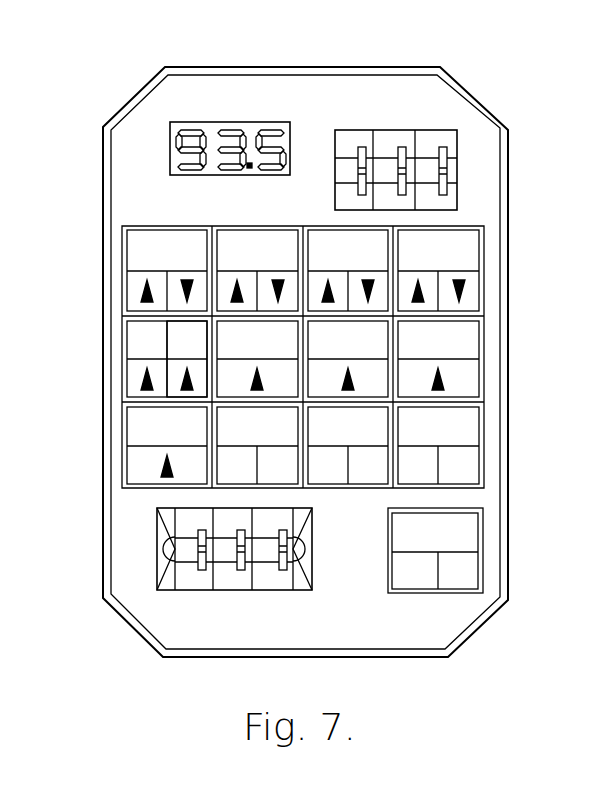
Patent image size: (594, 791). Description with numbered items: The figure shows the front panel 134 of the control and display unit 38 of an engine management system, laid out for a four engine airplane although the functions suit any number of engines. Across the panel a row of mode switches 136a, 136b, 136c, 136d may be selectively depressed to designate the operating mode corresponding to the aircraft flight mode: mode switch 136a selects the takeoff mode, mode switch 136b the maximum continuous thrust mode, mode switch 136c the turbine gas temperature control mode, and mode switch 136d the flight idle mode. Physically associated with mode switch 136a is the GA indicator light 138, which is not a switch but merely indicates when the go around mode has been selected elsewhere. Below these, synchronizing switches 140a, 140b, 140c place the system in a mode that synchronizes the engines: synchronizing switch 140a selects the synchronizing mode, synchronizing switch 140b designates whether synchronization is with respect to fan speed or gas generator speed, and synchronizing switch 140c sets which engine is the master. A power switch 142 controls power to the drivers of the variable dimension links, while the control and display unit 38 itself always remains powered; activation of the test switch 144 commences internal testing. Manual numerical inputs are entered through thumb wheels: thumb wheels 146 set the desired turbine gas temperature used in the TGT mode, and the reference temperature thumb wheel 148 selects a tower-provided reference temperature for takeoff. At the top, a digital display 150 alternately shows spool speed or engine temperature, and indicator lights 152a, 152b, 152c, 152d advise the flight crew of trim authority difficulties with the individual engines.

The front panel 134 is at (128, 127).
The control and display unit 38 is at (516, 124).
The digital display 150 is at (273, 123).
The reference temperature thumb wheel 148 is at (444, 134).
The indicator light 152a is at (134, 241).
The indicator light 152b is at (235, 240).
The indicator light 152c is at (363, 247).
The indicator light 152d is at (462, 258).
The mode switch 136a is at (123, 349).
The indicator light 138 is at (173, 350).
The mode switch 136b is at (225, 345).
The mode switch 136c is at (375, 352).
The mode switch 136d is at (465, 343).
The synchronizing switch 140a is at (132, 433).
The synchronizing switch 140b is at (227, 432).
The synchronizing switch 140c is at (378, 414).
The power switch 142 is at (467, 437).
The test switch 144 is at (478, 538).
The thumb wheels 146 is at (181, 583).